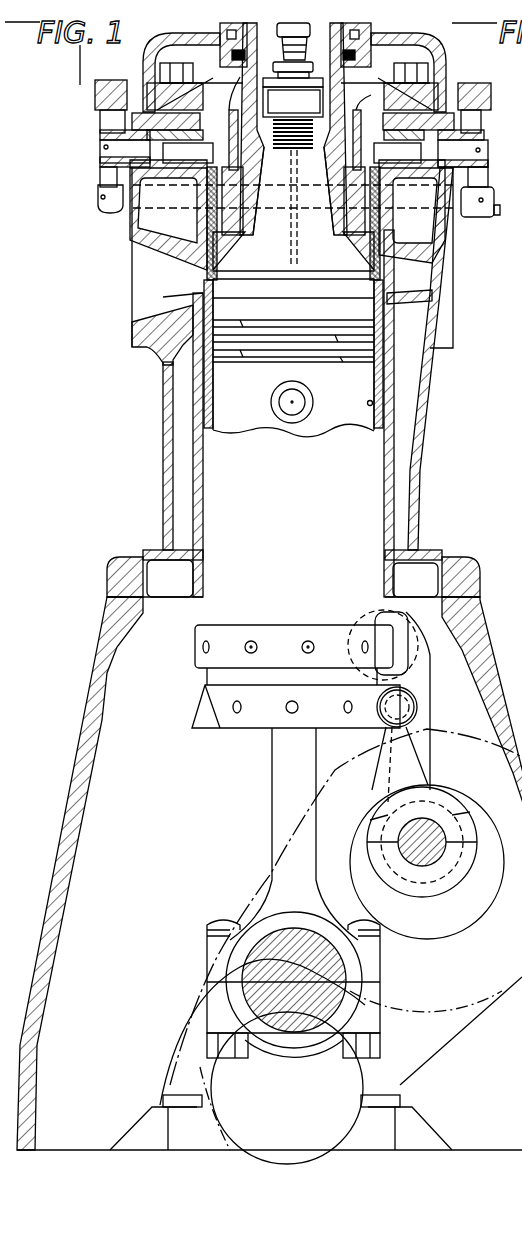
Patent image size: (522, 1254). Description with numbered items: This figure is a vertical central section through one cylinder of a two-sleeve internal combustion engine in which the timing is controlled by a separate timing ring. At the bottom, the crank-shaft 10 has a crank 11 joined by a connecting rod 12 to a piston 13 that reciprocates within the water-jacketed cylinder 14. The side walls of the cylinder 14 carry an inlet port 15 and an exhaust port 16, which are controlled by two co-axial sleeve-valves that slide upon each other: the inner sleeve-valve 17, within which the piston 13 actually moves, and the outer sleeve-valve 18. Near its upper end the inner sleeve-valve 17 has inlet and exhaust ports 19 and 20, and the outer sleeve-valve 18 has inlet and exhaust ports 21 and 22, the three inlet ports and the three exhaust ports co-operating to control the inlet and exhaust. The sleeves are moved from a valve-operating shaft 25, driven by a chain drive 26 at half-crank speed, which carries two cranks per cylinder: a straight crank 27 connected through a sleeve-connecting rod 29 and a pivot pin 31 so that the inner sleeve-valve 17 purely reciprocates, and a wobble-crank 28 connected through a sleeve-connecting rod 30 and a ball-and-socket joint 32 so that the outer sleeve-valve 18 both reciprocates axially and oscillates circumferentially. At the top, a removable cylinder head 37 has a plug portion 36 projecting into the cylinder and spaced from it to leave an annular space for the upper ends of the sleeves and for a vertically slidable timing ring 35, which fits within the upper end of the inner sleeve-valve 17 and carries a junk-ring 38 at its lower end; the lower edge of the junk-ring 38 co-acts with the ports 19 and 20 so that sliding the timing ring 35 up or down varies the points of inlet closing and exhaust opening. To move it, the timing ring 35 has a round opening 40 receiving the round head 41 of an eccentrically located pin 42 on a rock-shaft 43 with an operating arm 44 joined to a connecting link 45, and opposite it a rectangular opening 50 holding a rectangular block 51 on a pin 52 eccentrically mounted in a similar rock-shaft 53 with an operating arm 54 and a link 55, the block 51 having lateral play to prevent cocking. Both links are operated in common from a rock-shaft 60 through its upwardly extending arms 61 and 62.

The crank-shaft 10 is at (208, 1125).
The crank 11 is at (273, 930).
The connecting rod 12 is at (272, 777).
The piston 13 is at (293, 354).
The cylinder 14 is at (398, 380).
The inlet port 15 is at (425, 257).
The exhaust port 16 is at (159, 257).
The inner sleeve-valve 17 is at (390, 410).
The outer sleeve-valve 18 is at (198, 614).
The inlet port 19 is at (410, 245).
The exhaust port 20 is at (207, 258).
The inlet port 21 is at (395, 270).
The exhaust port 22 is at (185, 296).
The valve-operating shaft 25 is at (447, 883).
The chain drive 26 is at (448, 1040).
The crank 27 is at (443, 828).
The wobble-crank 28 is at (400, 887).
The sleeve-connecting rod 29 is at (392, 757).
The sleeve-connecting rod 30 is at (433, 707).
The pivot pin 31 is at (405, 703).
The ball-and-socket joint 32 is at (395, 617).
The timing ring 35 is at (262, 184).
The plug portion 36 is at (327, 173).
The cylinder head 37 is at (360, 68).
The junk-ring 38 is at (363, 282).
The round opening 40 is at (207, 143).
The round head 41 is at (238, 137).
The eccentrically located pin 42 is at (188, 154).
The rock-shaft 43 is at (167, 62).
The operating arm 44 is at (105, 117).
The connecting link 45 is at (107, 80).
The rectangular opening 50 is at (357, 130).
The rectangular block 51 is at (408, 77).
The pin 52 is at (397, 154).
The rock-shaft 53 is at (445, 163).
The operating arm 54 is at (478, 125).
The link 55 is at (483, 85).
The rock-shaft 60 is at (493, 215).
The arm 61 is at (100, 173).
The arm 62 is at (480, 178).